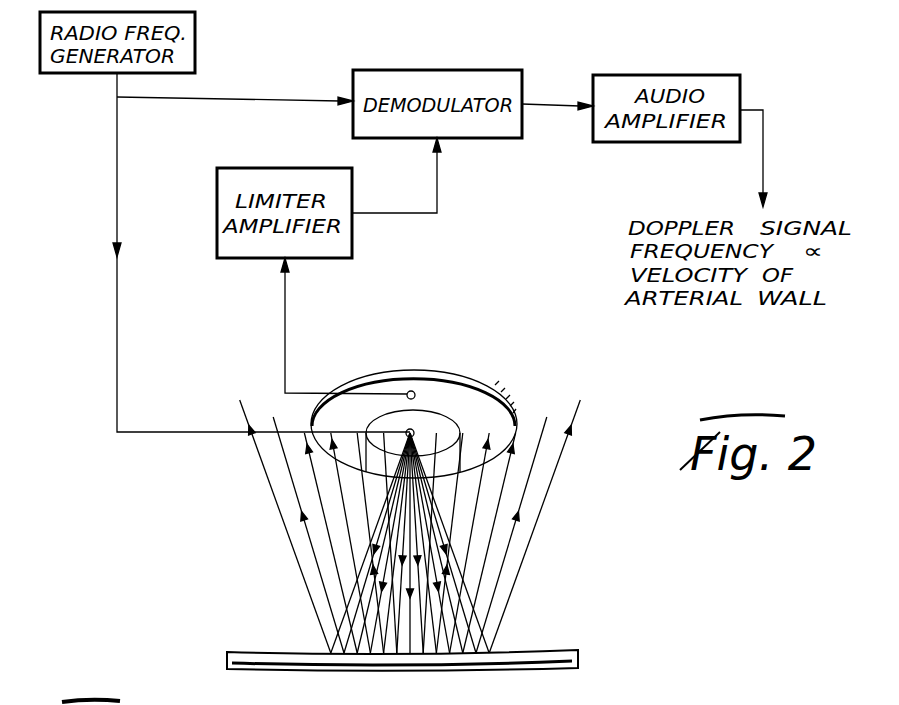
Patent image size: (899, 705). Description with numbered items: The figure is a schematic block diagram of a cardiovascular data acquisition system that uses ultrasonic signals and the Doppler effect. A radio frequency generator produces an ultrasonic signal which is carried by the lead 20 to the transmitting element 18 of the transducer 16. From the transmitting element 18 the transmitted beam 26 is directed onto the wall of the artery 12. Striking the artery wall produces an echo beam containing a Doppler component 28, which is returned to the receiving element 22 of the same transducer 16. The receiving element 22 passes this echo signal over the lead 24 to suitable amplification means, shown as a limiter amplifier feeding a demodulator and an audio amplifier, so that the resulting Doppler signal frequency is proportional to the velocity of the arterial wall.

The artery 12 is at (513, 653).
The transducer 16 is at (484, 376).
The transmitting element 18 is at (428, 421).
The lead 20 is at (160, 431).
The receiving element 22 is at (482, 410).
The lead 24 is at (313, 392).
The transmitted beam 26 is at (425, 543).
The Doppler component 28 is at (502, 563).